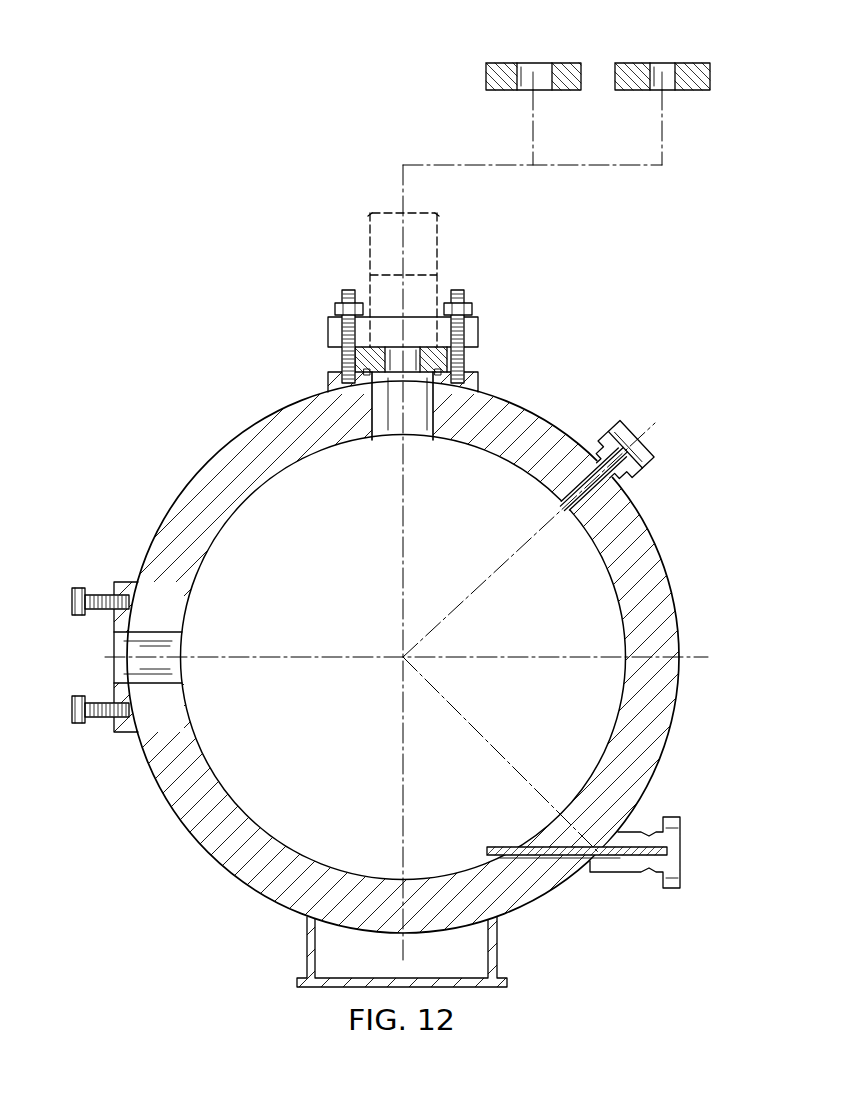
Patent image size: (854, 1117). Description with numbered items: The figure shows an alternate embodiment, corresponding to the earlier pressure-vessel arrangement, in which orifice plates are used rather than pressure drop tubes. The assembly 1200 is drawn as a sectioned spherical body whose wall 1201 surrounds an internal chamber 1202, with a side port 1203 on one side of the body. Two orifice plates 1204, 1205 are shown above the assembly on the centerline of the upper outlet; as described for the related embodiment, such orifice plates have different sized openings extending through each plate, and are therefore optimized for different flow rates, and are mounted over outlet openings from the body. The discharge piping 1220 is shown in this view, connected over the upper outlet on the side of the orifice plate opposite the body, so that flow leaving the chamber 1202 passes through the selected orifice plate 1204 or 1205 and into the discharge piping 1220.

The spherical vacuum chamber assembly 1200 is at (427, 545).
The chamber wall 1201 is at (171, 504).
The chamber interior 1202 is at (352, 791).
The side port 1203 is at (118, 646).
The port flange 1204 is at (558, 58).
The port flange 1205 is at (688, 58).
The discharge piping 1220 is at (365, 232).